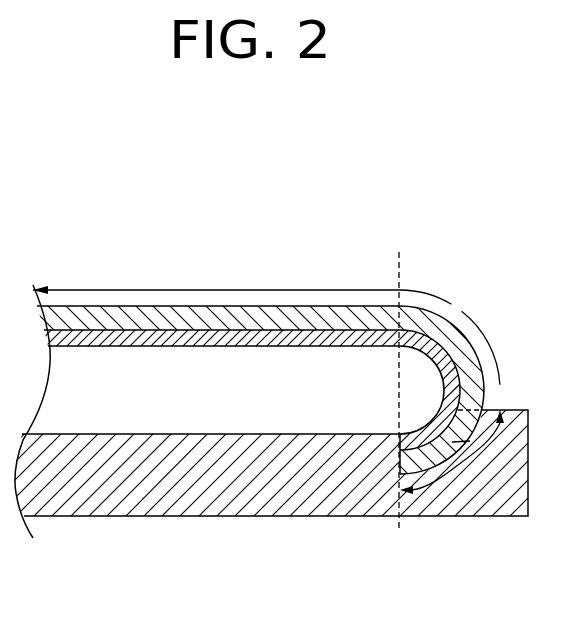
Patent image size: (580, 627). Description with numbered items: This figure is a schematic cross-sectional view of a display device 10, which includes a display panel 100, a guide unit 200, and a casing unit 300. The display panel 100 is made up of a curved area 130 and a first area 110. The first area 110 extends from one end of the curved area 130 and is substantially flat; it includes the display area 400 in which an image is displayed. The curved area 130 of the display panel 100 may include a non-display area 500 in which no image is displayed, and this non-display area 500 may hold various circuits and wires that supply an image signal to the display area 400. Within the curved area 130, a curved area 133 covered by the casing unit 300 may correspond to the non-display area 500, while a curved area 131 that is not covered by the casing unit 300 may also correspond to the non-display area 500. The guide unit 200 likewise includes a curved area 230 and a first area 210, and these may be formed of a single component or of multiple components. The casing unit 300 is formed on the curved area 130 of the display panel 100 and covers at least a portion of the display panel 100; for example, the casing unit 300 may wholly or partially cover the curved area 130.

The display device 10 is at (507, 176).
The display panel 100 is at (290, 203).
The first area 110 is at (295, 318).
The curved area 130 is at (423, 240).
The curved area 131 is at (452, 323).
The curved area 133 is at (500, 397).
The guide unit 200 is at (300, 577).
The first area 210 is at (296, 338).
The curved area 230 is at (445, 392).
The casing unit 300 is at (205, 508).
The display area 400 is at (266, 324).
The non-display area 500 is at (483, 468).